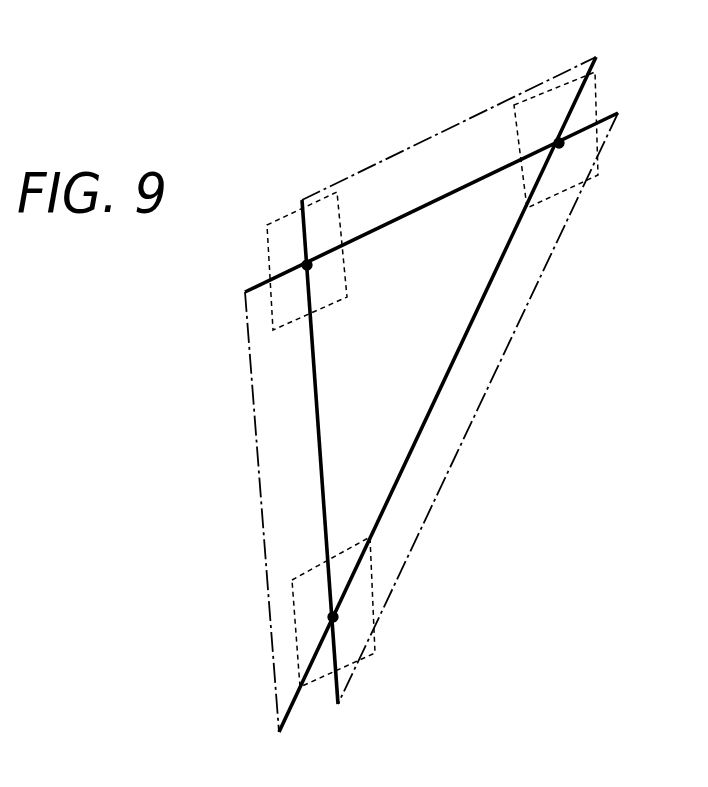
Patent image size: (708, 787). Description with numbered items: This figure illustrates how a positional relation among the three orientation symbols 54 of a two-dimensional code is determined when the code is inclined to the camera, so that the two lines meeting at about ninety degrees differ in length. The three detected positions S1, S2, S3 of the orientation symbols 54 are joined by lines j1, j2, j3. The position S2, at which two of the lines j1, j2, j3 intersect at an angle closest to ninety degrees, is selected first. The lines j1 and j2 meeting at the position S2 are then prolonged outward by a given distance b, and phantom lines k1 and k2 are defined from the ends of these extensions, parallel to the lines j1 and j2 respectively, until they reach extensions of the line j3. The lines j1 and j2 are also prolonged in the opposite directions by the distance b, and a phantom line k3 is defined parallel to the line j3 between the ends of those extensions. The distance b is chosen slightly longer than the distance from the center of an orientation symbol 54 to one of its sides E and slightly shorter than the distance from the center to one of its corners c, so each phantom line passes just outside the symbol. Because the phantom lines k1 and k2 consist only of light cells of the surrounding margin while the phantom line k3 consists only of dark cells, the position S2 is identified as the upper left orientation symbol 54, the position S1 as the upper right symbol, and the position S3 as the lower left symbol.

The orientation symbol 54 is at (569, 97).
The distance b is at (608, 110).
The corner c is at (598, 180).
The side E is at (610, 136).
The position S1 is at (559, 143).
The position S2 is at (307, 265).
The position S3 is at (333, 617).
The line j1 is at (402, 222).
The line j2 is at (322, 440).
The line j3 is at (434, 402).
The phantom line k1 is at (440, 126).
The phantom line k2 is at (258, 472).
The phantom line k3 is at (477, 417).